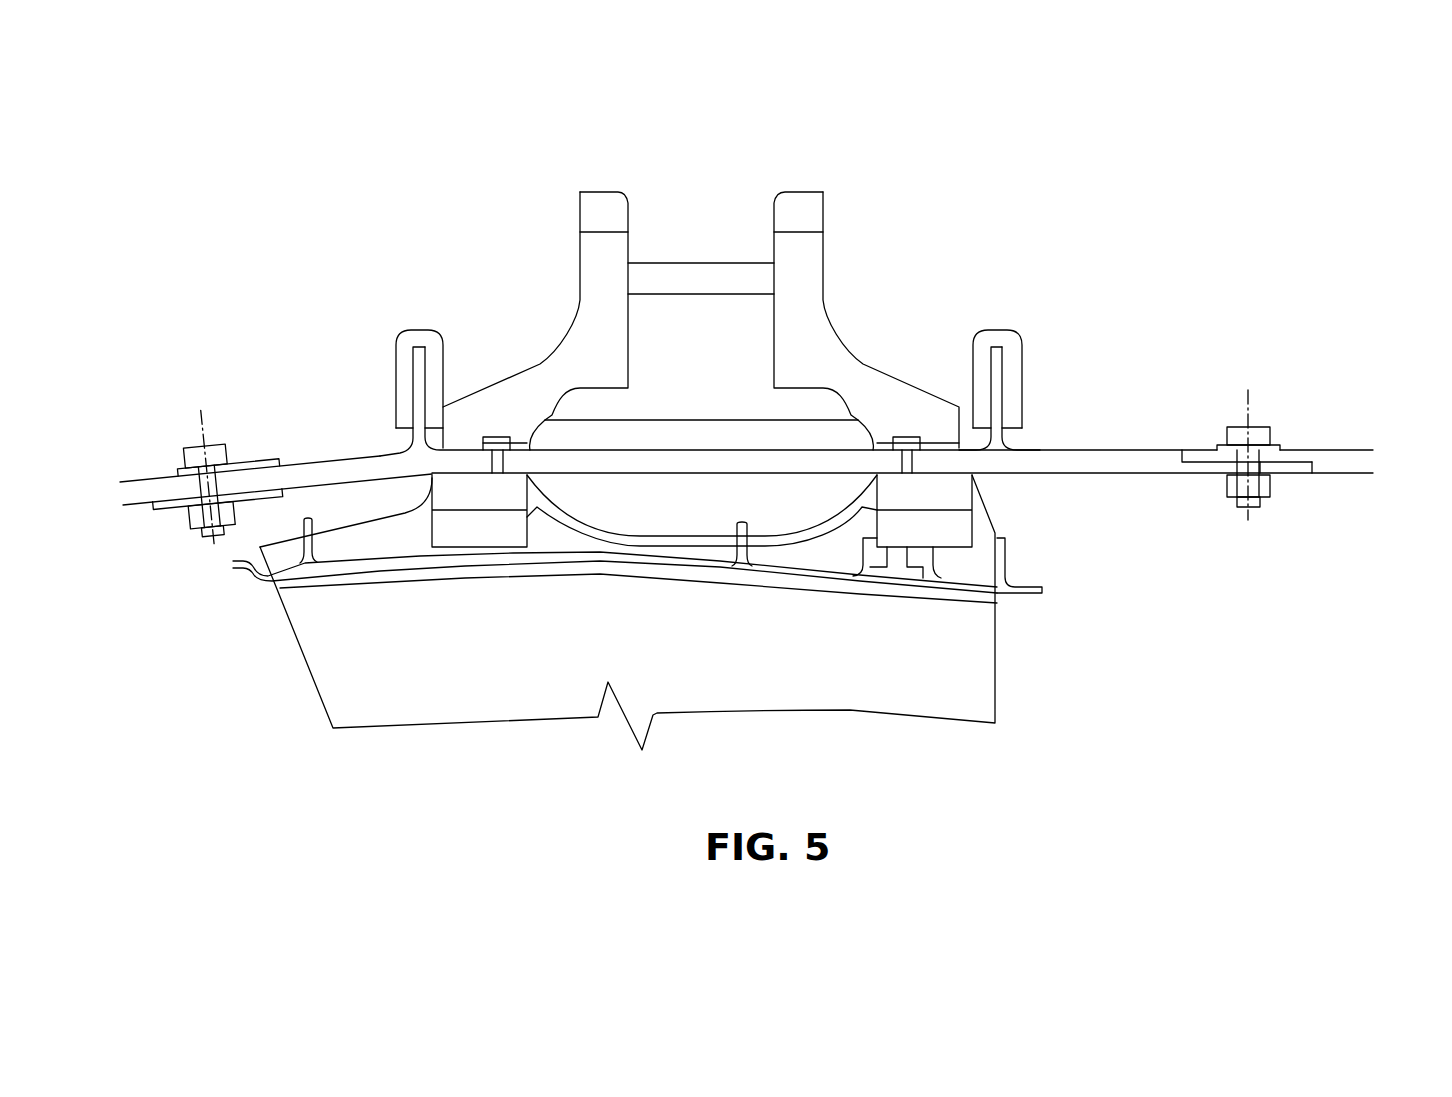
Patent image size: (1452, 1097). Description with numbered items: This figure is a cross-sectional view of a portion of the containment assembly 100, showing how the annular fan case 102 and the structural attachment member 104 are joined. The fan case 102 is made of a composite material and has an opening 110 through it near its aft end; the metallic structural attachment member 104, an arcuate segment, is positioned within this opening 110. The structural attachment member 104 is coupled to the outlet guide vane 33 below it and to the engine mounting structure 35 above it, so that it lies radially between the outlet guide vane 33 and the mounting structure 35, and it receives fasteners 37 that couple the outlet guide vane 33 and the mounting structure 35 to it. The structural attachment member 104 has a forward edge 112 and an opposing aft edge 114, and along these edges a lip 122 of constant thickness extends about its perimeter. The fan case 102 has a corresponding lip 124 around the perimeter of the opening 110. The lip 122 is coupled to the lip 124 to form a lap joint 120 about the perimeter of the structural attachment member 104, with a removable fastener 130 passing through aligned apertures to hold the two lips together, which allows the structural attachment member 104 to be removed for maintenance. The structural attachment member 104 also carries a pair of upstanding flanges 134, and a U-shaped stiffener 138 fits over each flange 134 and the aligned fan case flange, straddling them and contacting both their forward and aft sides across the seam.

The containment assembly 100 is at (1083, 173).
The outlet guide vane 33 is at (965, 672).
The engine mounting structure 35 is at (815, 333).
The fastener 37 is at (913, 458).
The fan case 102 is at (155, 482).
The structural attachment member 104 is at (1100, 458).
The opening 110 is at (1130, 500).
The forward edge 112 is at (192, 545).
The aft edge 114 is at (1300, 372).
The joint 120 is at (247, 400).
The lip 122 is at (165, 498).
The lip 124 is at (253, 472).
The fastener 130 is at (197, 452).
The structural attachment member flange 134 is at (420, 397).
The stiffener 138 is at (425, 338).